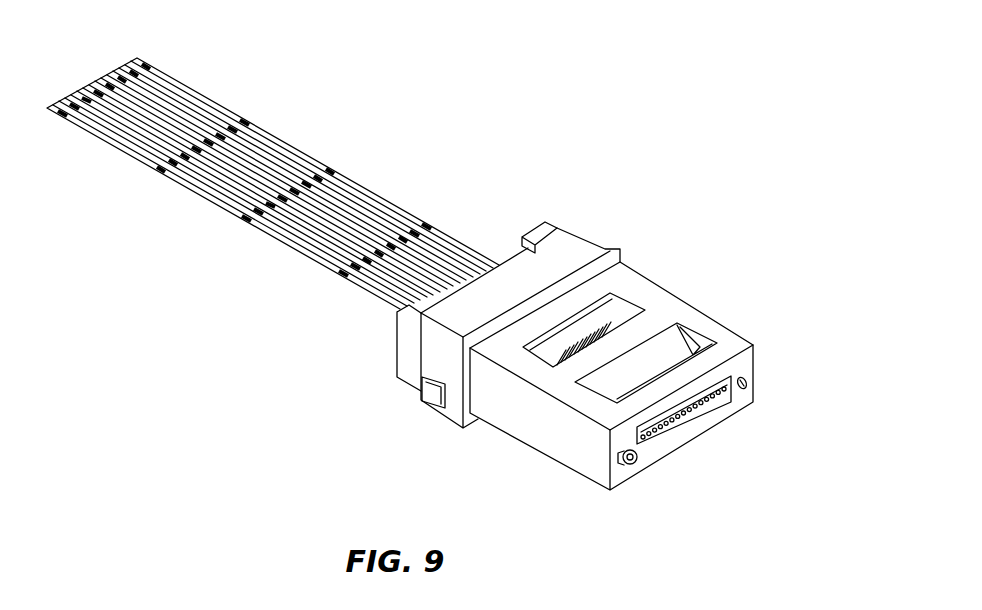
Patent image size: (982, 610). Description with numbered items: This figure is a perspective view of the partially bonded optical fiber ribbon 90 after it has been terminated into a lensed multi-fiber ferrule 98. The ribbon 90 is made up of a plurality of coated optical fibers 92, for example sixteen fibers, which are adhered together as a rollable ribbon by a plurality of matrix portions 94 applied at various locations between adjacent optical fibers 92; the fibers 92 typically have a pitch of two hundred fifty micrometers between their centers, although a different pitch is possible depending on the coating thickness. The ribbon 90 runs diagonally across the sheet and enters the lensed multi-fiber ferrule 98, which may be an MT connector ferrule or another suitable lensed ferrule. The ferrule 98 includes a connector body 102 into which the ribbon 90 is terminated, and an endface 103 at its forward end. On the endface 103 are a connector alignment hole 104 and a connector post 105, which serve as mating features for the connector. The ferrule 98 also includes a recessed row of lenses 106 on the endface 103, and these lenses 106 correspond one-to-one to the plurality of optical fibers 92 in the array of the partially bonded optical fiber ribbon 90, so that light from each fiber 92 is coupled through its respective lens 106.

The partially bonded optical fiber ribbon 90 is at (634, 101).
The optical fibers 92 is at (207, 93).
The matrix portions 94 is at (240, 123).
The lensed multi-fiber ferrule 98 is at (712, 304).
The connector body 102 is at (638, 285).
The endface 103 is at (723, 434).
The connector alignment hole 104 is at (752, 392).
The connector post 105 is at (633, 467).
The recessed row of lenses 106 is at (690, 410).